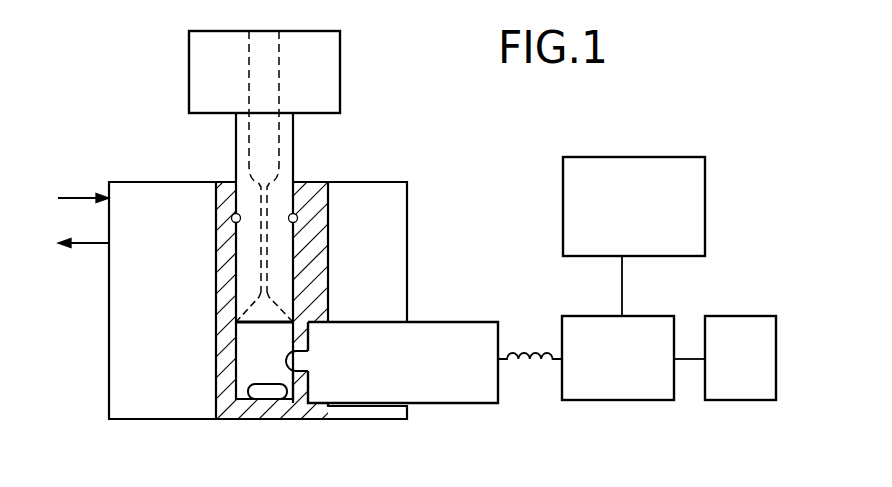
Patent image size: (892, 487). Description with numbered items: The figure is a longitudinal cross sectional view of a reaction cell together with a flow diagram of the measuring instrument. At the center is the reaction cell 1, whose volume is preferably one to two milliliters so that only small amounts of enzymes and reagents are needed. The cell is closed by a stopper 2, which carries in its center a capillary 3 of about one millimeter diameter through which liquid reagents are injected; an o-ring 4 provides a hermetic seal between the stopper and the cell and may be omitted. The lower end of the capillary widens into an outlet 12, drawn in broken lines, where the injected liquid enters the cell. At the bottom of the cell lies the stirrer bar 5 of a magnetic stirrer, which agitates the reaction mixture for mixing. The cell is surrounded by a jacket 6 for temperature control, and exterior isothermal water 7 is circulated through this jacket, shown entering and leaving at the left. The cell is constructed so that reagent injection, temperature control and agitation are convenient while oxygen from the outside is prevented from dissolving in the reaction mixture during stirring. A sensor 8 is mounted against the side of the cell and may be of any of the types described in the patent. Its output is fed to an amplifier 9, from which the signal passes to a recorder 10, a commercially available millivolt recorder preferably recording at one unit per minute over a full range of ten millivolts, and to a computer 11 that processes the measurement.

The reaction cell 1 is at (243, 367).
The stopper 2 is at (325, 70).
The capillary 3 is at (268, 207).
The o-ring 4 is at (297, 214).
The stirrer bar 5 is at (269, 401).
The jacket 6 is at (125, 357).
The isothermal water 7 is at (83, 221).
The sensor 8 is at (457, 330).
The amplifier 9 is at (618, 393).
The recorder 10 is at (741, 384).
The computer 11 is at (700, 202).
The nozzle outlet 12 is at (272, 303).